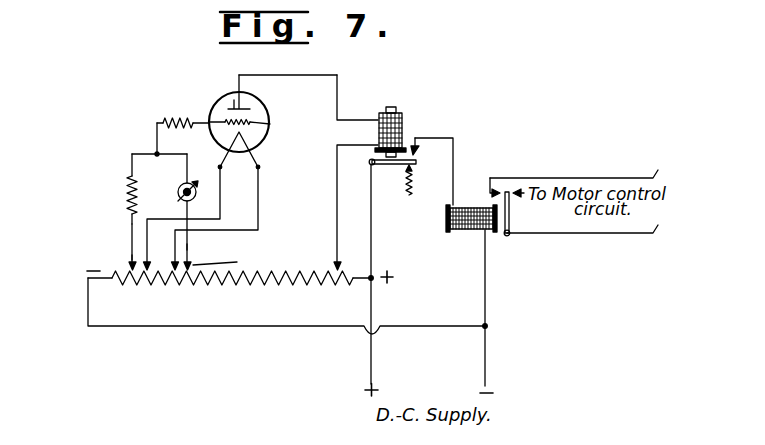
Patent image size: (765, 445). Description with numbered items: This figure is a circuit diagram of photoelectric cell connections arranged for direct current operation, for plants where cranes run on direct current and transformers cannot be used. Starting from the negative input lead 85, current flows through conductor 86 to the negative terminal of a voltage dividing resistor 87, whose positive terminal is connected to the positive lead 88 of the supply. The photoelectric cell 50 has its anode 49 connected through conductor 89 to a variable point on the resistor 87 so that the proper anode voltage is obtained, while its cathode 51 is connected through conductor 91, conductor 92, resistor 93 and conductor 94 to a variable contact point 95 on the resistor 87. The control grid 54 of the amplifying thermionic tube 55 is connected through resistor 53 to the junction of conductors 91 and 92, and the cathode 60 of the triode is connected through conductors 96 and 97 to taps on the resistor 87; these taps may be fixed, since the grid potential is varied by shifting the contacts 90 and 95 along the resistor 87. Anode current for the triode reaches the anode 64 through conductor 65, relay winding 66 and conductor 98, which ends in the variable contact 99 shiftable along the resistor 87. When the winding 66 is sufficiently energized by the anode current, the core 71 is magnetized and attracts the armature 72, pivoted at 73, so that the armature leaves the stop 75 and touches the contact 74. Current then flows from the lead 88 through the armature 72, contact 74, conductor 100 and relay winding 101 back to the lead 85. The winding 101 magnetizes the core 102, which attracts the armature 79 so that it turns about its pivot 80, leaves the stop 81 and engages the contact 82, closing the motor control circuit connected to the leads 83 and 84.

The anode 49 is at (179, 198).
The photoelectric cell 50 is at (194, 186).
The cathode 51 is at (177, 183).
The resistor 53 is at (181, 117).
The control grid 54 is at (254, 119).
The amplifying thermionic tube 55 is at (250, 108).
The cathode 60 is at (254, 143).
The anode 64 is at (231, 94).
The conductor 65 is at (338, 94).
The relay winding 66 is at (403, 129).
The core 71 is at (396, 109).
The armature 72 is at (400, 166).
The pivot 73 is at (370, 164).
The contact 74 is at (418, 148).
The stop 75 is at (413, 186).
The armature 79 is at (510, 219).
The pivot 80 is at (509, 237).
The stop 81 is at (524, 193).
The contact 82 is at (500, 187).
The lead 83 is at (575, 162).
The lead 84 is at (582, 245).
The negative input lead 85 is at (487, 361).
The conductor 86 is at (236, 328).
The voltage dividing resistor 87 is at (247, 284).
The positive lead 88 is at (373, 251).
The conductor 89 is at (189, 250).
The contact 90 is at (228, 261).
The conductor 91 is at (180, 150).
The conductor 92 is at (143, 154).
The resistor 93 is at (128, 190).
The conductor 94 is at (131, 229).
The variable contact point 95 is at (131, 260).
The conductor 96 is at (220, 201).
The conductor 97 is at (258, 217).
The conductor 98 is at (330, 219).
The variable contact 99 is at (336, 256).
The conductor 100 is at (456, 170).
The relay winding 101 is at (473, 232).
The core 102 is at (444, 228).